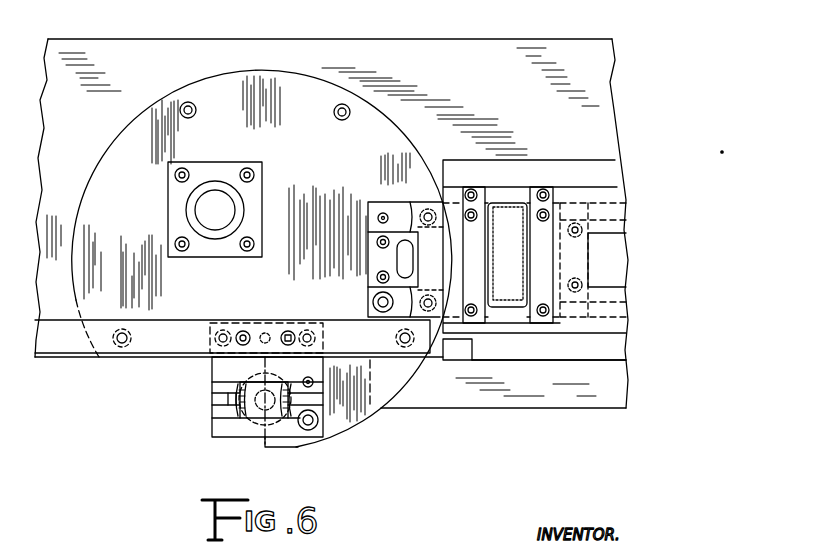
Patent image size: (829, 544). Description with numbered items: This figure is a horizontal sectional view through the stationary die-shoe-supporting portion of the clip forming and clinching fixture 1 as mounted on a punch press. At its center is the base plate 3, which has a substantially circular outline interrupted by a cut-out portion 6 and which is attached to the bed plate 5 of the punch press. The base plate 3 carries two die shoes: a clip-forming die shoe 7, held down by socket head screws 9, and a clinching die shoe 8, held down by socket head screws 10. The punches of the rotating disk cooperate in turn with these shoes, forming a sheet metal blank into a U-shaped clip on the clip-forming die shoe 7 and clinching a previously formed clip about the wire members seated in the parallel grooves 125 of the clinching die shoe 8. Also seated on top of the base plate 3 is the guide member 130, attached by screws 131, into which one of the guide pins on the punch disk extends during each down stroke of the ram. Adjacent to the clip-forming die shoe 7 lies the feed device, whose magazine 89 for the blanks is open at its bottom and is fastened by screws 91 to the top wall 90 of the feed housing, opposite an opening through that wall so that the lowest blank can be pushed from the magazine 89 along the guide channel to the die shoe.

The machine 1 is at (221, 6).
The base plate 3 is at (95, 182).
The bed plate 5 is at (462, 45).
The cut-out portion 6 is at (265, 441).
The clip-forming die shoe 7 is at (397, 241).
The clinching die shoe 8 is at (254, 414).
The socket head screws 9 is at (382, 277).
The socket head screws 10 is at (287, 336).
The magazine 89 is at (513, 324).
The top wall 90 is at (611, 330).
The screws 91 is at (556, 313).
The grooves 125 is at (240, 413).
The guide member 130 is at (195, 226).
The screws 131 is at (243, 251).